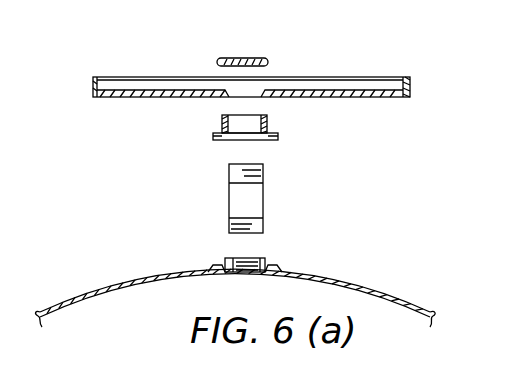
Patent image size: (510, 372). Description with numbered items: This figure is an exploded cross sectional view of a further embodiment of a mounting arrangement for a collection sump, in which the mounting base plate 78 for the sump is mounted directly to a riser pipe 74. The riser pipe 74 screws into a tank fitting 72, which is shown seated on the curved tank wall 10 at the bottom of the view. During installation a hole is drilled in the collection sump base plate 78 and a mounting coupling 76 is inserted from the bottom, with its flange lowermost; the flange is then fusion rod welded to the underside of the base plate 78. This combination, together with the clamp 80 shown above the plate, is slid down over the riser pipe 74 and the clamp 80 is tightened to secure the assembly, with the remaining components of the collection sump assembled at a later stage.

The sheet 10 is at (98, 288).
The tank fitting 72 is at (268, 260).
The riser pipe 74 is at (263, 195).
The mounting coupling 76 is at (265, 140).
The mounting base plate 78 is at (410, 98).
The clamp 80 is at (265, 57).